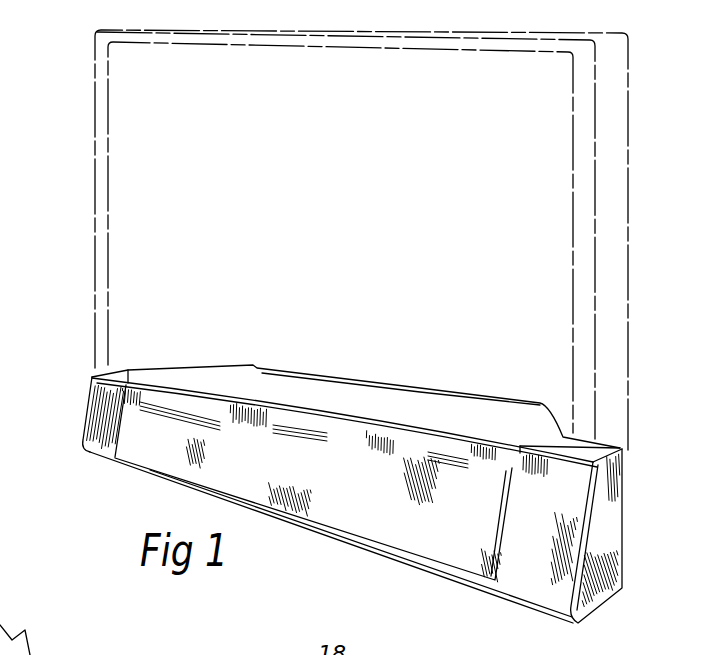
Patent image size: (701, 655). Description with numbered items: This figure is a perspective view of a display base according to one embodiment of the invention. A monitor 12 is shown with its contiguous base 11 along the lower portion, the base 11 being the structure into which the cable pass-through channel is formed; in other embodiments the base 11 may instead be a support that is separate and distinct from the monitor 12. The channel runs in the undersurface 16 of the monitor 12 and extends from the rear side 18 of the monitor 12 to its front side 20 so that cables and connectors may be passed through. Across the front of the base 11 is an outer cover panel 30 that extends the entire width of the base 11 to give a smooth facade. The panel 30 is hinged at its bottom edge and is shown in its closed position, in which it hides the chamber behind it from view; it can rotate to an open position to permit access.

The base 11 is at (345, 455).
The monitor 12 is at (72, 146).
The undersurface 16 is at (603, 606).
The rear side 18 is at (437, 390).
The front side 20 is at (93, 428).
The outer cover panel 30 is at (354, 515).